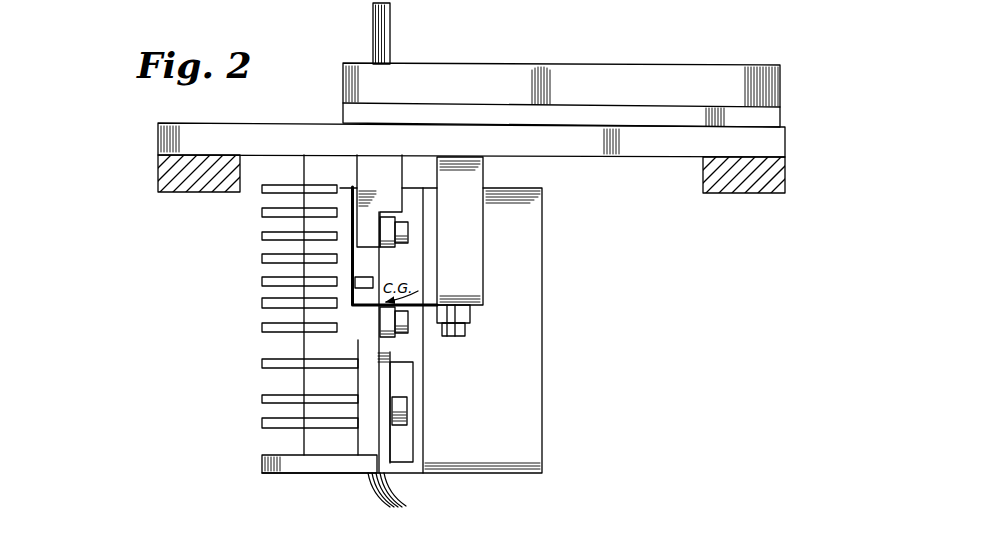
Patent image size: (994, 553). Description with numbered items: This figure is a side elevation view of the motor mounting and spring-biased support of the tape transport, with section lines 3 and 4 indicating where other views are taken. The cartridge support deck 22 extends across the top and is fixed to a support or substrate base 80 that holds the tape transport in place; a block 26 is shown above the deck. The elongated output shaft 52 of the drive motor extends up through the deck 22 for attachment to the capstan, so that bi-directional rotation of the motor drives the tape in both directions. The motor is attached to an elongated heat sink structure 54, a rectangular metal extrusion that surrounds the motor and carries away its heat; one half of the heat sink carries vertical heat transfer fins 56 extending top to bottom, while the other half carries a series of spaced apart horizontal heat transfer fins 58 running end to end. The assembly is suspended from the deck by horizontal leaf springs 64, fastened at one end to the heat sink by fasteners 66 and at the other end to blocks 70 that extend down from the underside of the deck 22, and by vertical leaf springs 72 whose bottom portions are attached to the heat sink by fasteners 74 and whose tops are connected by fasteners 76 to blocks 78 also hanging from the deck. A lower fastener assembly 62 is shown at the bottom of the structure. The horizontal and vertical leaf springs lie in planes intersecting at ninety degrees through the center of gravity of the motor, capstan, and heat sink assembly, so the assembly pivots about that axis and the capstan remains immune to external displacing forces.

The section line 3- 3 is at (148, 154).
The section line 4- 4 is at (88, 470).
The cartridge support deck 22 is at (274, 102).
The support block 26 is at (570, 70).
The output shaft 52 is at (377, 33).
The heat sink structure 54 is at (517, 272).
The vertical heat transfer fins 56 is at (522, 378).
The horizontal heat transfer fins 58 is at (262, 326).
The lower fastener assembly 62 is at (407, 392).
The leaf springs 64 is at (420, 308).
The fasteners 66 is at (363, 290).
The blocks 70 is at (471, 258).
The vertical leaf springs 72 is at (382, 265).
The fasteners 74 is at (422, 345).
The fasteners 76 is at (407, 230).
The blocks 78 is at (368, 173).
The substrate base 80 is at (185, 183).